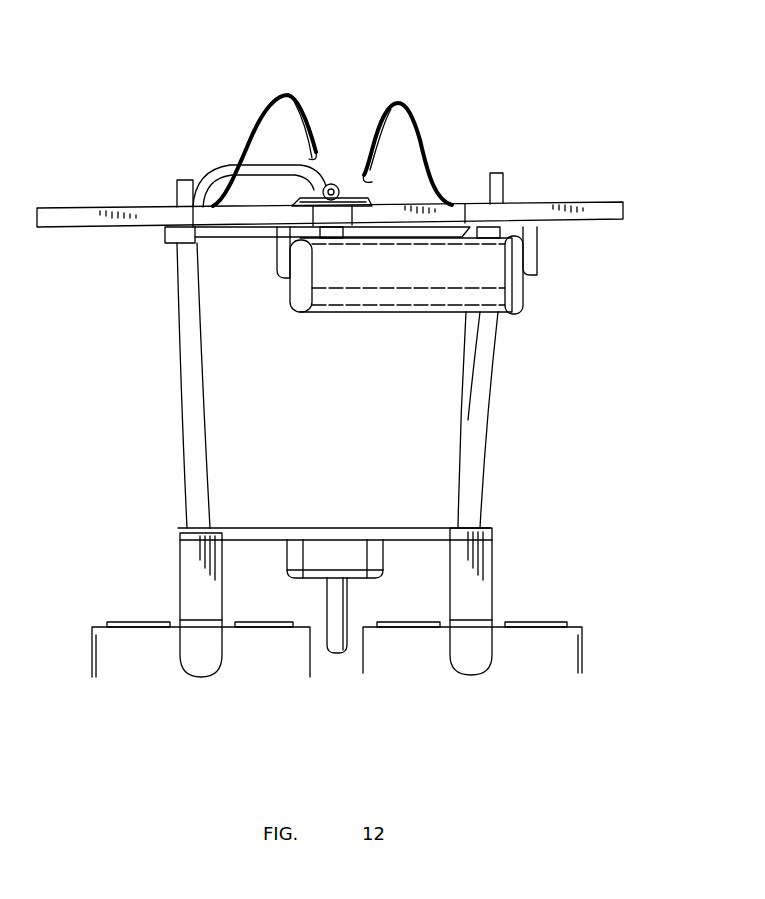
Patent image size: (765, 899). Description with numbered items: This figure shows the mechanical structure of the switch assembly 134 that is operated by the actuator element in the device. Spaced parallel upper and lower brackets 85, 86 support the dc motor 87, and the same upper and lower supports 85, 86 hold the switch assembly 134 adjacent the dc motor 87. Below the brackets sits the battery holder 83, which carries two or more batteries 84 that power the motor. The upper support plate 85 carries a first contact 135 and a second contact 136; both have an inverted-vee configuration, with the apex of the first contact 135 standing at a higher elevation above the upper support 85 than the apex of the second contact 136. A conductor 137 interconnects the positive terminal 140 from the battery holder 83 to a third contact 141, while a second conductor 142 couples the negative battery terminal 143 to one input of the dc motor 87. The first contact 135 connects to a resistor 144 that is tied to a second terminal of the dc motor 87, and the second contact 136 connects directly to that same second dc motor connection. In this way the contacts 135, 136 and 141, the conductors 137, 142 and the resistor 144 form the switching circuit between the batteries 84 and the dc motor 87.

The battery holder 83 is at (585, 620).
The batteries 84 is at (405, 655).
The upper bracket 85 is at (565, 203).
The lower bracket 86 is at (420, 527).
The dc motor 87 is at (357, 455).
The switch assembly 134 is at (500, 115).
The first contact 135 is at (283, 96).
The second contact 136 is at (400, 103).
The conductor 137 is at (185, 368).
The positive terminal 140 is at (190, 572).
The third contact 141 is at (352, 196).
The second conductor 142 is at (487, 358).
The negative battery terminal 143 is at (482, 576).
The resistor 144 is at (508, 292).